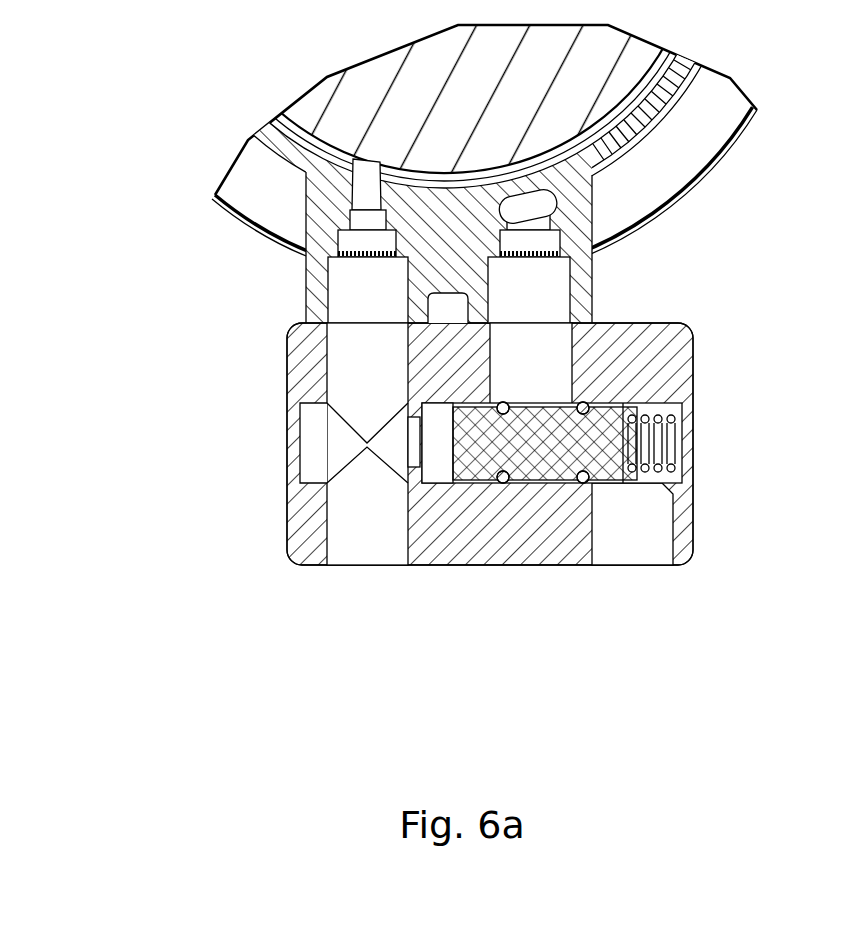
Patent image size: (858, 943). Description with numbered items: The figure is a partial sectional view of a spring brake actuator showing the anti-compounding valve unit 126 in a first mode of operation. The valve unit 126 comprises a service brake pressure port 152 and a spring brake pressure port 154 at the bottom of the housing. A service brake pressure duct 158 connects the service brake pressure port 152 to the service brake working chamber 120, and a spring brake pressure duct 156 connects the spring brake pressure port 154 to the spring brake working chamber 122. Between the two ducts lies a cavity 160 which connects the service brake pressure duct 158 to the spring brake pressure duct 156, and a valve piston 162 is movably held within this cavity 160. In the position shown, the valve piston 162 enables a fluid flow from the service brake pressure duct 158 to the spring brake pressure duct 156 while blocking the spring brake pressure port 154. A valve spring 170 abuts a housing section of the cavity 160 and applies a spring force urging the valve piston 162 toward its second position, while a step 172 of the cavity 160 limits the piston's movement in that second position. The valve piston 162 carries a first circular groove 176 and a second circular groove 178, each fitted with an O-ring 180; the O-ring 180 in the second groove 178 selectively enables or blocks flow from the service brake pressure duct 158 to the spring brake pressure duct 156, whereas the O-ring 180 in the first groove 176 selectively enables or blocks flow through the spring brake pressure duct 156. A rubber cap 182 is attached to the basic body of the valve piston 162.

The service brake working chamber 120 is at (442, 110).
The spring brake working chamber 122 is at (558, 190).
The anti-compounding valve unit 126 is at (272, 433).
The service brake pressure port 152 is at (371, 568).
The spring brake pressure port 154 is at (628, 572).
The spring brake pressure duct 156 is at (537, 287).
The service brake pressure duct 158 is at (350, 356).
The cavity 160 is at (437, 487).
The valve piston 162 is at (548, 448).
The valve spring 170 is at (654, 446).
The step 172 is at (420, 487).
The first circular groove 176 is at (595, 398).
The second circular groove 178 is at (512, 401).
The O-ring 180 is at (512, 490).
The rubber cap 182 is at (461, 463).